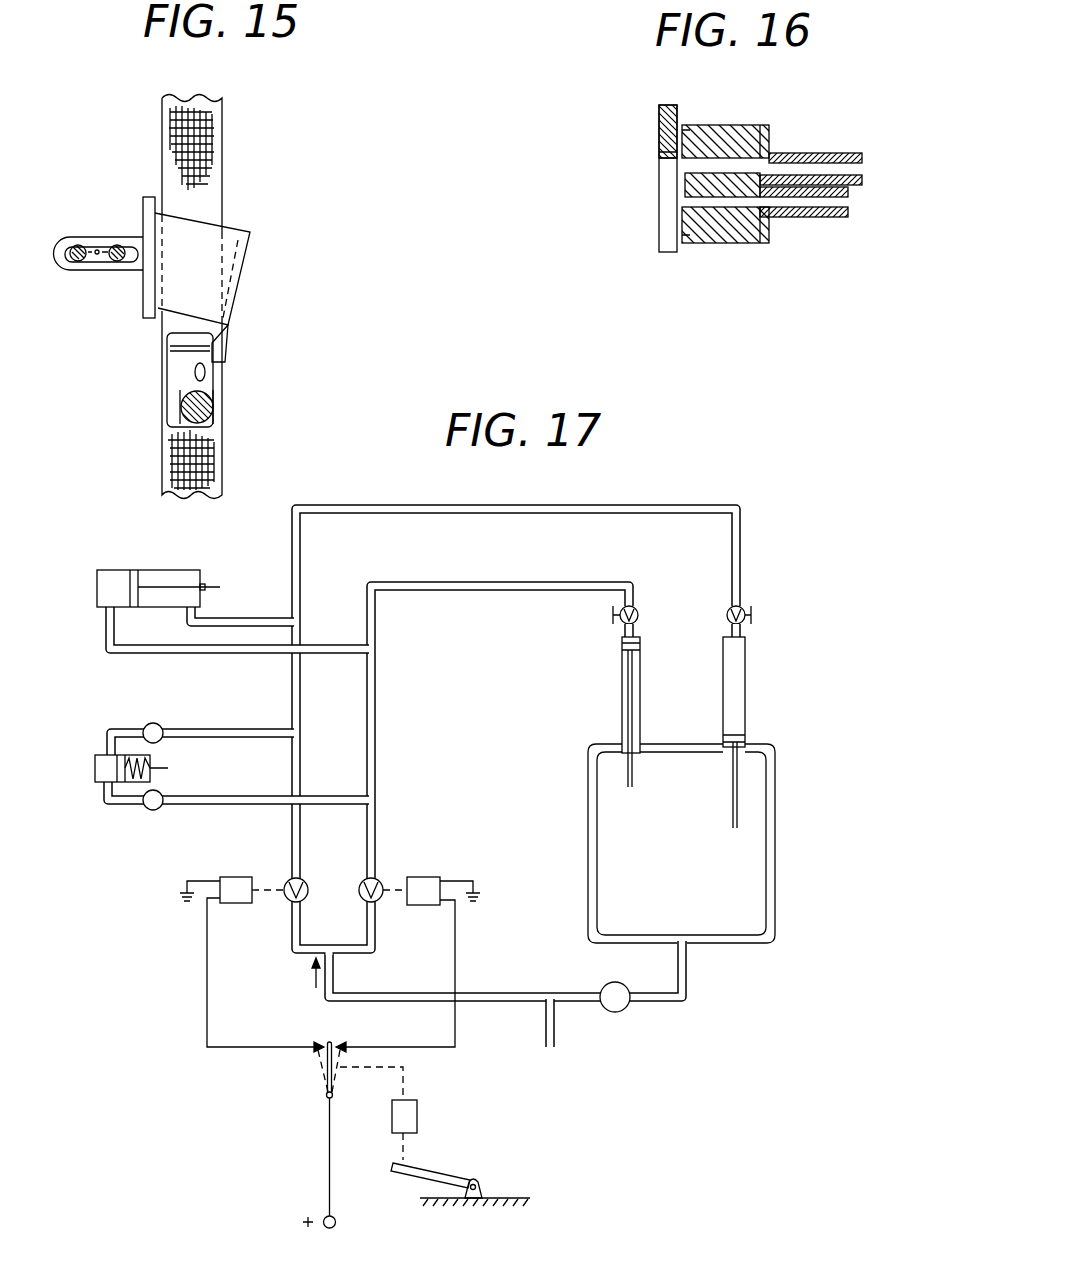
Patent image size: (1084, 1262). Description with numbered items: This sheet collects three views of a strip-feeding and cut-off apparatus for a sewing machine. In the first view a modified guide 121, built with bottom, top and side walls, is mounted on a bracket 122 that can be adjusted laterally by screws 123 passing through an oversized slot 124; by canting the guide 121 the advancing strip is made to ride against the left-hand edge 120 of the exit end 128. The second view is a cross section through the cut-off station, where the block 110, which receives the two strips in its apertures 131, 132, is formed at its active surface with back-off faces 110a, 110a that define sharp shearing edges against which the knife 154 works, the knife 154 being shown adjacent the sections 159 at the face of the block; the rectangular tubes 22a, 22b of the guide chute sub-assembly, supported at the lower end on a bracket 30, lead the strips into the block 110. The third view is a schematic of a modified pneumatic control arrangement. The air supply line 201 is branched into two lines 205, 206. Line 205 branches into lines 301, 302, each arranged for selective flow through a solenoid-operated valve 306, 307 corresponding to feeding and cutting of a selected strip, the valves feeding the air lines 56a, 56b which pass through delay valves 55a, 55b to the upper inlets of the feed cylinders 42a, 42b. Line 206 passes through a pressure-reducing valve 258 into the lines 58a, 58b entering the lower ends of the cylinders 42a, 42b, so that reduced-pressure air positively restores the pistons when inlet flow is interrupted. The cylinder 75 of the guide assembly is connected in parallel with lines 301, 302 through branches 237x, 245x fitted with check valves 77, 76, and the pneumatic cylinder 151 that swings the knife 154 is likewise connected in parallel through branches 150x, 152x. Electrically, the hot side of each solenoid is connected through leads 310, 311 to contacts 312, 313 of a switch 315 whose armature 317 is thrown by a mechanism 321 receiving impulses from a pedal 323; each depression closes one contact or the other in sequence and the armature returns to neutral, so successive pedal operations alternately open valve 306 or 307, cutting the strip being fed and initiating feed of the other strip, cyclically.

In FIG. 15, the left-hand edge 120 is at (220, 350).
In FIG. 15, the guide 121 is at (248, 282).
In FIG. 15, the bracket 122 is at (135, 237).
In FIG. 15, the screws 123 is at (105, 270).
In FIG. 15, the oversized slot 124 is at (96, 250).
In FIG. 15, the exit end 128 is at (168, 322).
In FIG. 16, the tube 22a is at (795, 155).
In FIG. 16, the tube 22b is at (812, 219).
In FIG. 16, the bracket 30 is at (770, 127).
In FIG. 16, the block 110 is at (720, 126).
In FIG. 16, the back-off faces 110a is at (682, 136).
In FIG. 16, the aperture 131 is at (727, 178).
In FIG. 16, the aperture 132 is at (726, 215).
In FIG. 16, the knife 154 is at (662, 125).
In FIG. 16, the seal ring 159 is at (668, 104).
In FIG. 17, the feed cylinder 42a is at (622, 688).
In FIG. 17, the feed cylinder 42b is at (745, 690).
In FIG. 17, the delay valve 55a is at (640, 616).
In FIG. 17, the delay valve 55b is at (746, 610).
In FIG. 17, the air line 56a is at (633, 602).
In FIG. 17, the air line 56b is at (741, 573).
In FIG. 17, the line 58a is at (598, 878).
In FIG. 17, the line 58b is at (766, 888).
In FIG. 17, the cylinder 75 is at (95, 770).
In FIG. 17, the check valve 76 is at (147, 809).
In FIG. 17, the check valve 77 is at (153, 722).
In FIG. 17, the branch 150x is at (106, 628).
In FIG. 17, the pneumatic cylinder 151 is at (139, 572).
In FIG. 17, the branch 152x is at (274, 612).
In FIG. 17, the air supply line 201 is at (552, 1044).
In FIG. 17, the line 205 is at (482, 993).
In FIG. 17, the line 206 is at (578, 993).
In FIG. 17, the branch 237x is at (264, 718).
In FIG. 17, the branch 245x is at (252, 792).
In FIG. 17, the pressure-reducing valve 258 is at (617, 1013).
In FIG. 17, the line 301 is at (286, 927).
In FIG. 17, the line 302 is at (378, 926).
In FIG. 17, the solenoid-operated valve 306 is at (233, 877).
In FIG. 17, the solenoid-operated valve 307 is at (434, 877).
In FIG. 17, the lead 310 is at (207, 987).
In FIG. 17, the lead 311 is at (457, 934).
In FIG. 17, the contact 312 is at (318, 1055).
In FIG. 17, the contact 313 is at (346, 1042).
In FIG. 17, the switch 315 is at (315, 1080).
In FIG. 17, the armature 317 is at (322, 1040).
In FIG. 17, the mechanism 321 is at (417, 1113).
In FIG. 17, the pedal 323 is at (440, 1177).